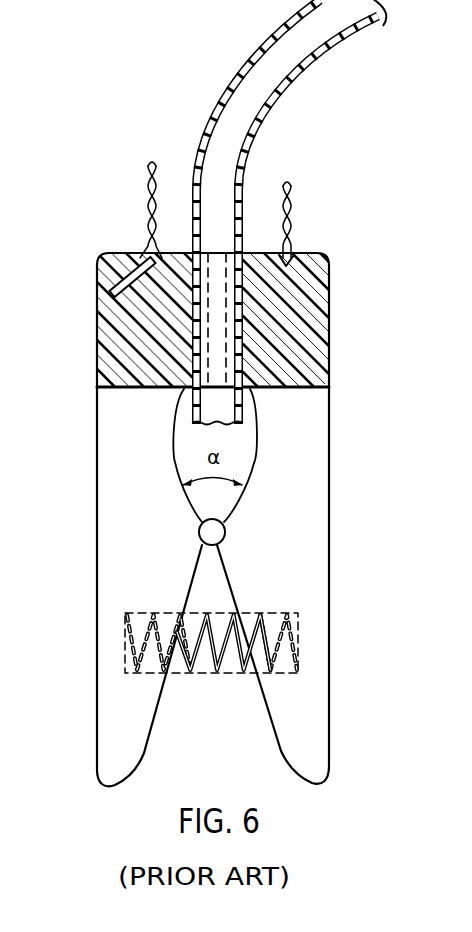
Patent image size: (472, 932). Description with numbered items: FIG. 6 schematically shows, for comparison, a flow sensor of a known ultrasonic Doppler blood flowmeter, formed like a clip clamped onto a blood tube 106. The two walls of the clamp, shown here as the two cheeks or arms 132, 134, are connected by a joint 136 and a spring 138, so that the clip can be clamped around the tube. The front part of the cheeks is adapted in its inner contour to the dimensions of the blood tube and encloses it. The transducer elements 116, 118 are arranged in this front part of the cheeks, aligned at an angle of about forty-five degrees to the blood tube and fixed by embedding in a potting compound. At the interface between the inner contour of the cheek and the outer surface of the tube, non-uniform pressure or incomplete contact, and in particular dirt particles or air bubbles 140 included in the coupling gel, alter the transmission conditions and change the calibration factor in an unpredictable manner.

The tube 106 is at (232, 153).
The transducer element 116 is at (312, 258).
The transducer element 118 is at (112, 256).
The right arm 132 is at (318, 445).
The left arm 134 is at (110, 439).
The joint 136 is at (200, 533).
The spring 138 is at (190, 673).
The dirt particles or air bubbles 140 is at (243, 323).